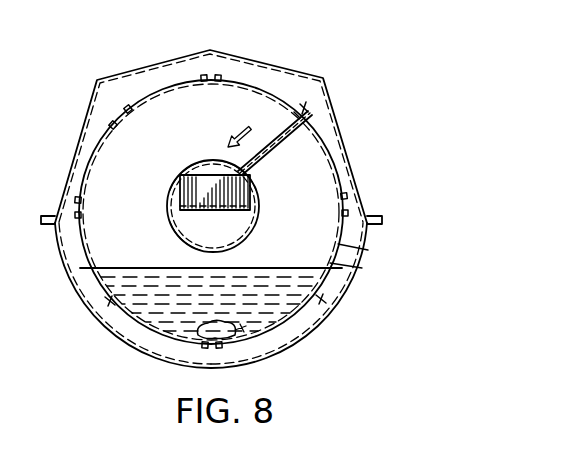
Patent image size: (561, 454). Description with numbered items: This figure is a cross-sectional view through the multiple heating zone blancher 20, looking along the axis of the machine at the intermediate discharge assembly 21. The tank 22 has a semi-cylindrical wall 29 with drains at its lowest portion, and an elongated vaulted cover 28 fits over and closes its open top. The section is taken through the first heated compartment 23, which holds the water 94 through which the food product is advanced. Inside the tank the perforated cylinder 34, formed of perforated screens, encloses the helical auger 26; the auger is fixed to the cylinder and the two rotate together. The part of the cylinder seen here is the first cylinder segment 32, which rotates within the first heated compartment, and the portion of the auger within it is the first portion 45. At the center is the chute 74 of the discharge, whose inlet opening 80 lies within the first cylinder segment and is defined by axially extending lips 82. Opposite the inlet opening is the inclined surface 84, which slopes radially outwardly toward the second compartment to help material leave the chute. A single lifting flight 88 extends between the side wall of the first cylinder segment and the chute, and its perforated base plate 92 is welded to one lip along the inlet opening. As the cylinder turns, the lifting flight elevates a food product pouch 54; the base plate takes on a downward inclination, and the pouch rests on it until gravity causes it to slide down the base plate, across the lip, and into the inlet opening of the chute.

The multiple heating zone blancher 20 is at (201, 198).
The intermediate discharge assembly 21 is at (172, 236).
The tank 22 is at (75, 303).
The first heated compartment 23 is at (312, 328).
The helical auger 26 is at (368, 250).
The elongated vaulted cover 28 is at (272, 64).
The semi-cylindrical wall 29 is at (70, 258).
The first cylinder segment 32 is at (362, 268).
The perforated cylinder 34 is at (331, 143).
The first portion of the auger 45 is at (160, 93).
The pouch 54 is at (277, 128).
The chute 74 is at (251, 238).
The inlet opening 80 is at (212, 174).
The lip 82 is at (190, 160).
The inclined surface 84 is at (250, 210).
The lifting flight 88 is at (252, 150).
The perforated base plate 92 is at (266, 163).
The water 94 is at (110, 268).